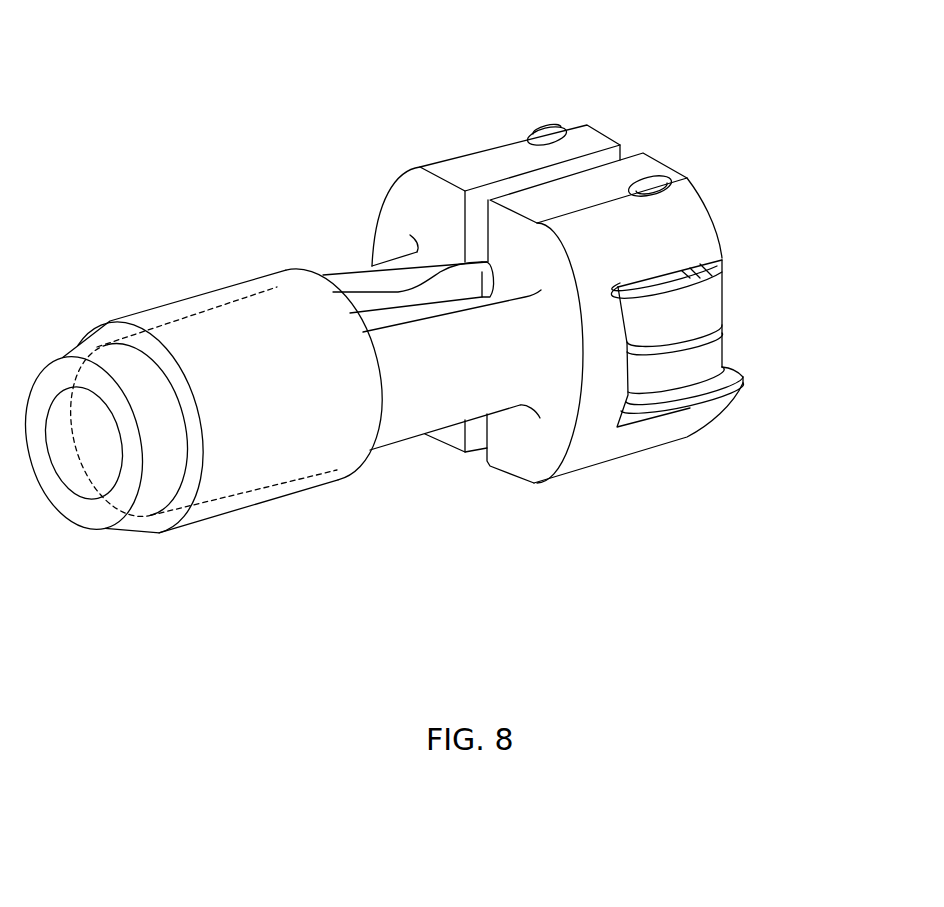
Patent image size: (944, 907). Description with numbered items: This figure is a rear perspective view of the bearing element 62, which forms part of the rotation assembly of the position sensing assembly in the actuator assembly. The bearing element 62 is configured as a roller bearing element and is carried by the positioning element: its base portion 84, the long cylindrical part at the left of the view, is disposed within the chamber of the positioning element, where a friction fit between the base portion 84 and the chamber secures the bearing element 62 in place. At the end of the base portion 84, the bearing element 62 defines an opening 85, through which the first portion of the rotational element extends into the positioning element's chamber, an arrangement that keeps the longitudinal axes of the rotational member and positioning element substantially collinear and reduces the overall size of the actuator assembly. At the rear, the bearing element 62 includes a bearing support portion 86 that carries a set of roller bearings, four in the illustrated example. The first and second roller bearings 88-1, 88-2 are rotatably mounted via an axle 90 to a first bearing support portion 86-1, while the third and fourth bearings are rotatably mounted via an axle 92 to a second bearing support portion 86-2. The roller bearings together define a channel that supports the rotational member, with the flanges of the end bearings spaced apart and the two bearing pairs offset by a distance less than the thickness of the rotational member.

The bearing element 62 is at (541, 93).
The base portion 84 is at (178, 300).
The opening 85 is at (71, 493).
The bearing support portion 86 is at (383, 187).
The first bearing support portion 86-1 is at (686, 438).
The second bearing support portion 86-2 is at (447, 157).
The first roller bearing 88-1 is at (717, 345).
The second roller bearing 88-2 is at (718, 288).
The axle 90 is at (661, 183).
The axle 92 is at (566, 128).